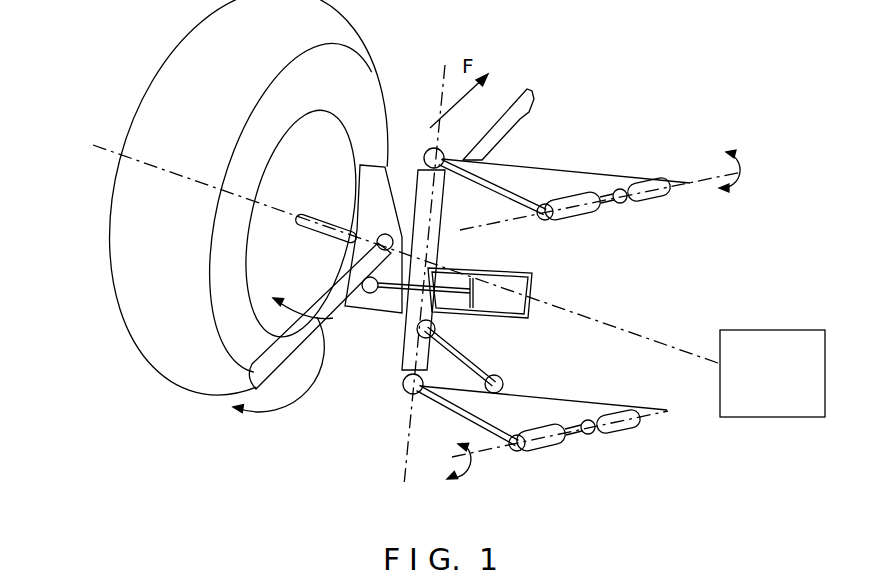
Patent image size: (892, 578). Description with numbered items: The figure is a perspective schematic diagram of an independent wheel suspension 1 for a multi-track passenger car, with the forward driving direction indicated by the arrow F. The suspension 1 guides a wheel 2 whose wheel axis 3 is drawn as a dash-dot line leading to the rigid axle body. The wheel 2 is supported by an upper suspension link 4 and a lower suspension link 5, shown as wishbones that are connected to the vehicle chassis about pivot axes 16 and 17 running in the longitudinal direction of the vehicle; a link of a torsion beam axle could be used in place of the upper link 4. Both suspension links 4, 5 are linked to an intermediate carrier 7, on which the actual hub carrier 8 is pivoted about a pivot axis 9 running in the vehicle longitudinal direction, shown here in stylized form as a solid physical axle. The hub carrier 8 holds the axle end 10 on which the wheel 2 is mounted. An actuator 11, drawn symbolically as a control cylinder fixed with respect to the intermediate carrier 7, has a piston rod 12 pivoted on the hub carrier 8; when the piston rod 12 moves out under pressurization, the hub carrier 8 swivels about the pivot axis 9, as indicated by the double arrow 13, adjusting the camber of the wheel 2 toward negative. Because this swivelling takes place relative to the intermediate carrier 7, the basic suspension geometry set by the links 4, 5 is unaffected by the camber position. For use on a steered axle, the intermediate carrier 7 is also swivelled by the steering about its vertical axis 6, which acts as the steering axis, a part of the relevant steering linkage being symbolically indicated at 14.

The independent wheel suspension 1 is at (690, 64).
The wheel 2 is at (110, 297).
The wheel axis 3 is at (663, 343).
The upper suspension link 4 is at (543, 177).
The lower suspension link 5 is at (563, 418).
The vertical axis 6 is at (408, 426).
The intermediate carrier 7 is at (403, 347).
The hub carrier 8 is at (388, 157).
The pivot axis 9 is at (522, 117).
The axle end 10 is at (328, 213).
The actuator 11 is at (533, 287).
The piston rod 12 is at (450, 313).
The double arrow 13 is at (293, 413).
The steering linkage 14 is at (463, 352).
The pivot axis 16 is at (690, 186).
The pivot axis 17 is at (652, 415).